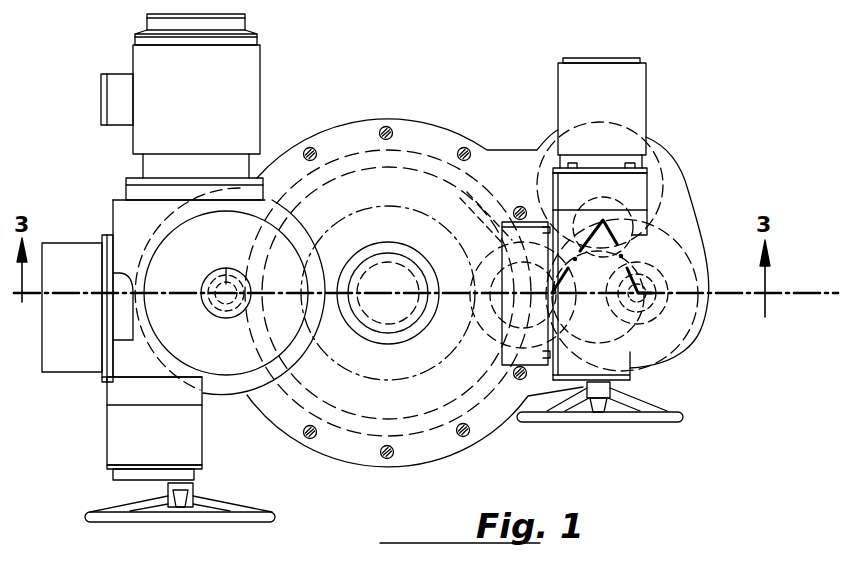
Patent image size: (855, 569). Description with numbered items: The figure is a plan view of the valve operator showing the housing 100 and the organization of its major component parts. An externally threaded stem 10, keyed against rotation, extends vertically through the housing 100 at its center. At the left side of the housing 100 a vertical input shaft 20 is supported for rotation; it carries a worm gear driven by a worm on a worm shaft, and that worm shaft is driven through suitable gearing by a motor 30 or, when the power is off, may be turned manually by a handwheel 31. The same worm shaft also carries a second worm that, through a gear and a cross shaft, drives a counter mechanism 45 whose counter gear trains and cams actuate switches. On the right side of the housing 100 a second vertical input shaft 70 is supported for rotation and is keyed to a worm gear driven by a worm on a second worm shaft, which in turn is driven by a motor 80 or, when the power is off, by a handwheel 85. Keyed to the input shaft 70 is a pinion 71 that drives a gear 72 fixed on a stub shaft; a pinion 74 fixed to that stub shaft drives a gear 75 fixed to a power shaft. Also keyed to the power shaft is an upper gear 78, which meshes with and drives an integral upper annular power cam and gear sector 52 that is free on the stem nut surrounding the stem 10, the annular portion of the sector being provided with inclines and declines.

The externally threaded stem 10 is at (407, 272).
The vertical input shaft 20 is at (226, 268).
The motor 30 is at (243, 82).
The handwheel 31 is at (276, 509).
The counter mechanism 45 is at (85, 353).
The upper annular power cam and gear sector 52 is at (427, 370).
The vertical input shaft 70 is at (688, 337).
The pinion 71 is at (660, 287).
The gear 72 is at (660, 228).
The pinion 74 is at (623, 198).
The gear 75 is at (494, 275).
The upper gear 78 is at (602, 295).
The motor 80 is at (636, 95).
The handwheel 85 is at (681, 424).
The housing 100 is at (425, 146).